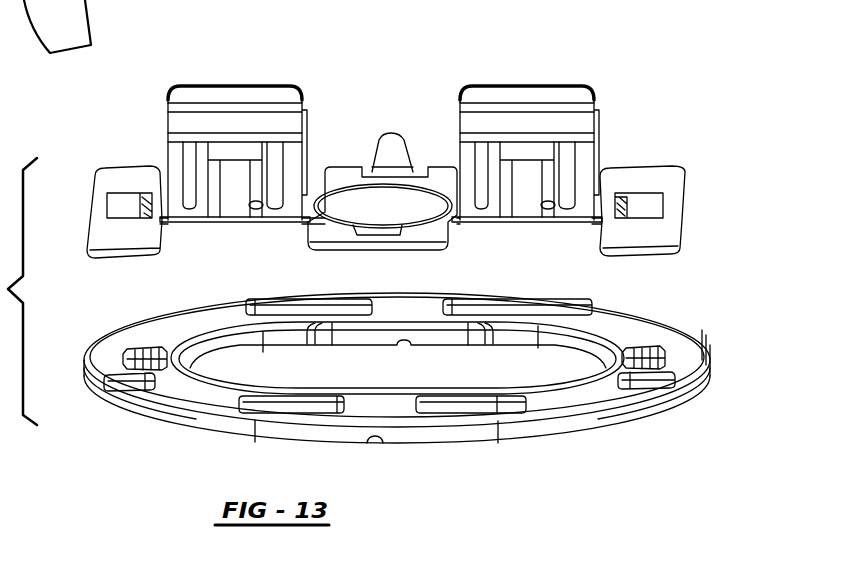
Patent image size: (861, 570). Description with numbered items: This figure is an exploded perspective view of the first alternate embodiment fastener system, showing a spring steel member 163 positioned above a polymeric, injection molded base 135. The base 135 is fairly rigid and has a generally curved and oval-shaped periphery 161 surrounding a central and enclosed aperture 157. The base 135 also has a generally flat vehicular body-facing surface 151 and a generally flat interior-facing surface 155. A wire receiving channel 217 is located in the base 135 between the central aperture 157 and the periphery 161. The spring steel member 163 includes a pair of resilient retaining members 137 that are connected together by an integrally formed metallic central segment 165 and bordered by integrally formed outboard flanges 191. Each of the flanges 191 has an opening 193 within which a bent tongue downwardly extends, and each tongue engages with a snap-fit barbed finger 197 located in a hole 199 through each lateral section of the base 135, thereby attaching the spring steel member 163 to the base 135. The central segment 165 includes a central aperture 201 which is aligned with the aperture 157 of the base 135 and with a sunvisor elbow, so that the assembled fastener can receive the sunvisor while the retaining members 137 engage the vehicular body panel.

The base 135 is at (157, 428).
The resilient retaining members 137 is at (231, 98).
The vehicular body-facing surface 151 is at (105, 361).
The interior-facing surface 155 is at (627, 48).
The central aperture 157 is at (427, 338).
The periphery 161 is at (577, 433).
The spring steel member 163 is at (635, 123).
The central segment 165 is at (343, 175).
The outboard flanges 191 is at (133, 235).
The opening 193 is at (128, 203).
The snap-fit barbed finger 197 is at (142, 353).
The hole 199 is at (657, 350).
The central aperture 201 is at (393, 205).
The wire receiving channel 217 is at (377, 442).